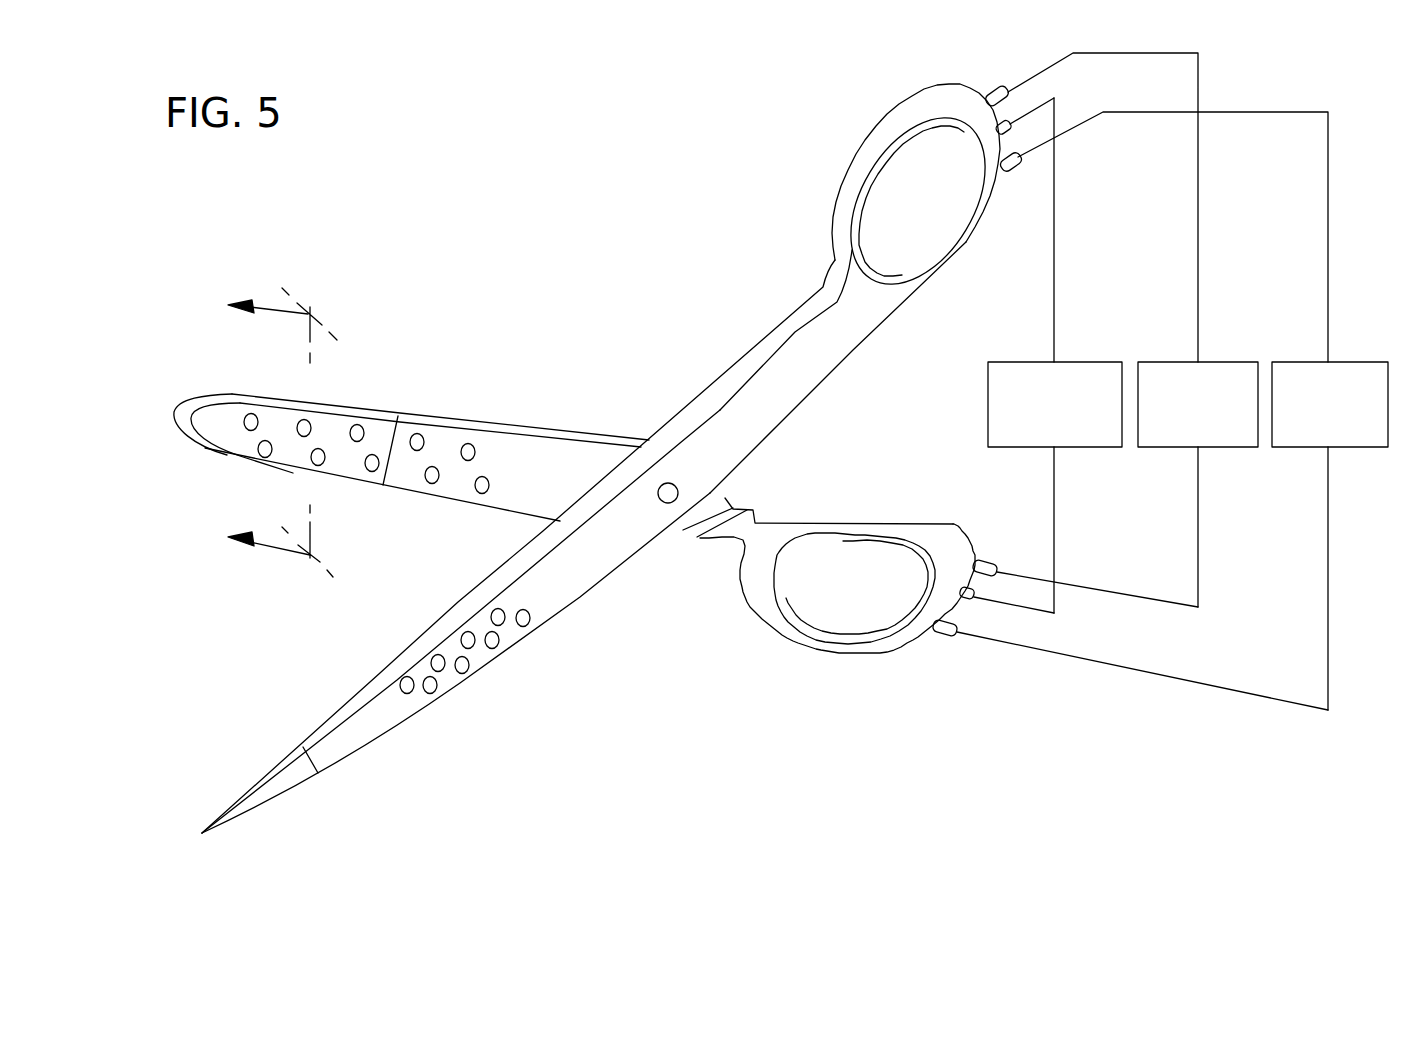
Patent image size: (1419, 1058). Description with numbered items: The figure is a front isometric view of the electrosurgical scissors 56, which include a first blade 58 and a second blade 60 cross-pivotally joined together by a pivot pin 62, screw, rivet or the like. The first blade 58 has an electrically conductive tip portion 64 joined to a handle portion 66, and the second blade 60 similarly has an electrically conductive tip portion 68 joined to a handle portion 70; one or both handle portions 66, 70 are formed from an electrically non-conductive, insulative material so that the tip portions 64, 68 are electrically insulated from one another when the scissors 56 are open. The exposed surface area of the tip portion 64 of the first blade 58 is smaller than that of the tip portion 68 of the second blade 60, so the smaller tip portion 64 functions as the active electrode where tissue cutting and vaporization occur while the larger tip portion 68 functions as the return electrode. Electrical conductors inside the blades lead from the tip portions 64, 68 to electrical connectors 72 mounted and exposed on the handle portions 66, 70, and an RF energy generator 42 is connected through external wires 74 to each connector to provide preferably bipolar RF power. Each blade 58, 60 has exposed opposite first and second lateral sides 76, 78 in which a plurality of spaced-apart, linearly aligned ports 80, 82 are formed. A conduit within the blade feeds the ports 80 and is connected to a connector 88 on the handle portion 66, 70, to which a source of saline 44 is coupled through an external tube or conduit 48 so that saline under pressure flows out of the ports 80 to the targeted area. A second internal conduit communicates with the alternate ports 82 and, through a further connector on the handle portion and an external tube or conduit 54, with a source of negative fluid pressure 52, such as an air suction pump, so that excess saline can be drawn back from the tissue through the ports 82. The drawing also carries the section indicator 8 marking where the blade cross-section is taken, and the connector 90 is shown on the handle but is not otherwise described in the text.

The electrosurgical scissors 56 is at (582, 198).
The first blade 58 is at (501, 560).
The second blade 60 is at (370, 454).
The pivot pin 62 is at (665, 502).
The tip portion of first blade 64 is at (280, 782).
The handle portion of first blade 66 is at (838, 368).
The tip portion of second blade 68 is at (183, 413).
The handle portion of second blade 70 is at (783, 527).
The electrical connectors 72 is at (1062, 107).
The external wires 74 is at (1054, 208).
The first lateral side 76 is at (373, 728).
The second lateral side 78 is at (410, 485).
The ports 80 is at (260, 447).
The ports 82 is at (417, 440).
The connector 88 is at (1010, 172).
The connector 90 is at (990, 92).
The RF energy generator 42 is at (1013, 362).
The source of negative fluid pressure 52 is at (1160, 362).
The source of saline 44 is at (1345, 362).
The external tube or conduit 54 is at (1198, 190).
The external tube or conduit 48 is at (1328, 220).
The section line 8- 8 is at (285, 432).